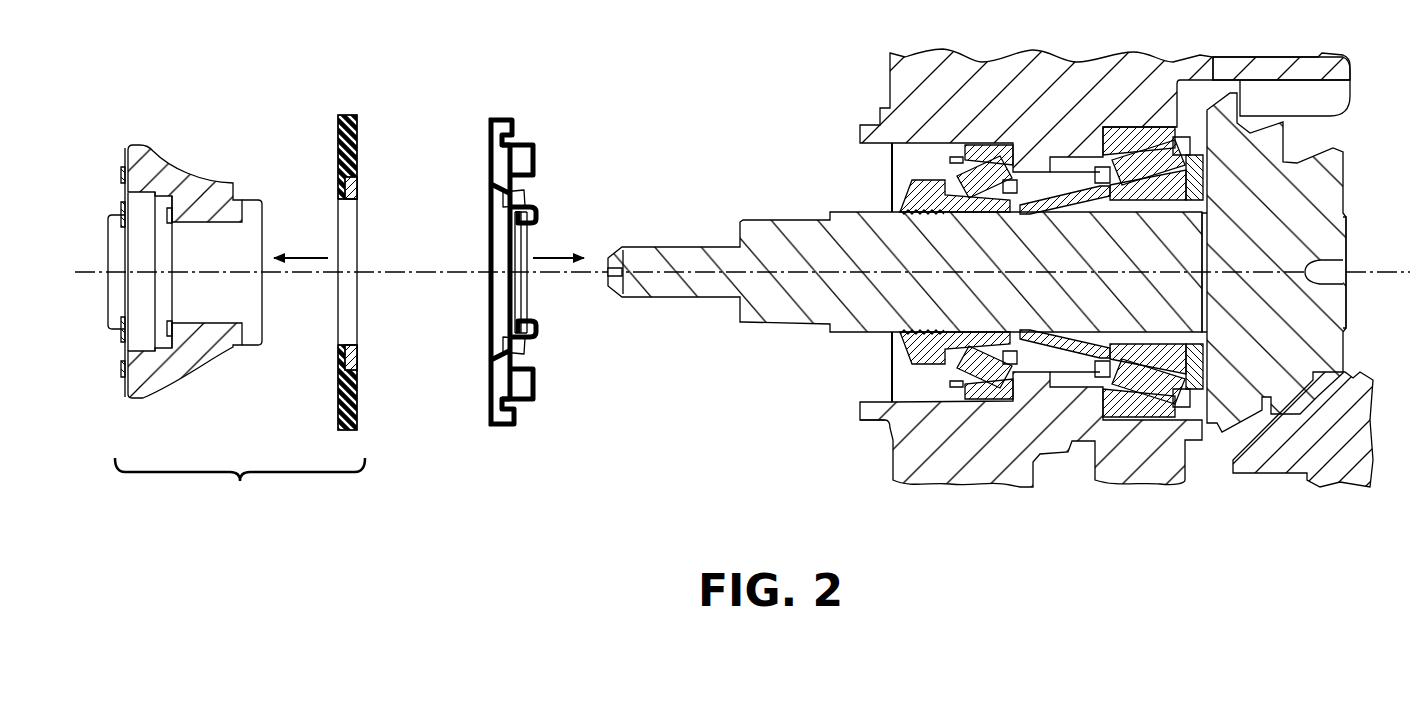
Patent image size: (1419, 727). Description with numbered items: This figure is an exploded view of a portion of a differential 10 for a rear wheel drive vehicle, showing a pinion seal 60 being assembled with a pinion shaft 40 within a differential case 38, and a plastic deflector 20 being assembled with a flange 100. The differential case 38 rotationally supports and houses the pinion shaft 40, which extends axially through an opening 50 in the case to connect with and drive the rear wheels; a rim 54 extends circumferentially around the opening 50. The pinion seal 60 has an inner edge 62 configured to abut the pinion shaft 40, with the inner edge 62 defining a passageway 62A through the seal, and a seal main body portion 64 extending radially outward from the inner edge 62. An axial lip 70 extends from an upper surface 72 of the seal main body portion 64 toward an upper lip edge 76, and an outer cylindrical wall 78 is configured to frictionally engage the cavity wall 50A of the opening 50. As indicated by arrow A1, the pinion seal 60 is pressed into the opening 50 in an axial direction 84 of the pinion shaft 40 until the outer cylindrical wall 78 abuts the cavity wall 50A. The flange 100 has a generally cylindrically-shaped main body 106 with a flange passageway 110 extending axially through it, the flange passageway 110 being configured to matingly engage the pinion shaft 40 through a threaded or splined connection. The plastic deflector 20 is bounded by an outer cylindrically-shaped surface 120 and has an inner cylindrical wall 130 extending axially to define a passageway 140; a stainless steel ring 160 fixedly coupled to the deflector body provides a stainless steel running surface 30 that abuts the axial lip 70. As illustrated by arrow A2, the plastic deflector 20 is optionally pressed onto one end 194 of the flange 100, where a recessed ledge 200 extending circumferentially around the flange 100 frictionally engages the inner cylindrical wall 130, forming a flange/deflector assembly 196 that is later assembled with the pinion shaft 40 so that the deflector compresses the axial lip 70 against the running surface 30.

The differential 10 is at (846, 62).
The plastic deflector 20 is at (343, 99).
The stainless steel running surface 30 is at (360, 175).
The differential case 38 is at (887, 73).
The pinion shaft 40 is at (686, 242).
The opening 50 is at (884, 179).
The cavity wall 50A is at (905, 400).
The rim 54 is at (868, 423).
The pinion seal 60 is at (490, 112).
The inner edge 62 is at (539, 212).
The passageway 62A is at (518, 307).
The seal main body portion 64 is at (489, 153).
The axial lip 70 is at (507, 199).
The upper surface 72 is at (489, 381).
The upper lip edge 76 is at (488, 185).
The outer cylindrical wall 78 is at (518, 146).
The axial direction 84 is at (1381, 262).
The flange 100 is at (122, 142).
The main body 106 is at (190, 178).
The flange passageway 110 is at (148, 319).
The outer cylindrically-shaped surface 120 is at (336, 118).
The inner cylindrical wall 130 is at (346, 203).
The passageway 140 is at (352, 327).
The stainless steel ring 160 is at (359, 357).
The end 194 is at (262, 206).
The flange/deflector assembly 196 is at (240, 484).
The recessed ledge 200 is at (240, 356).
The arrow A1 is at (556, 258).
The arrow A2 is at (305, 258).